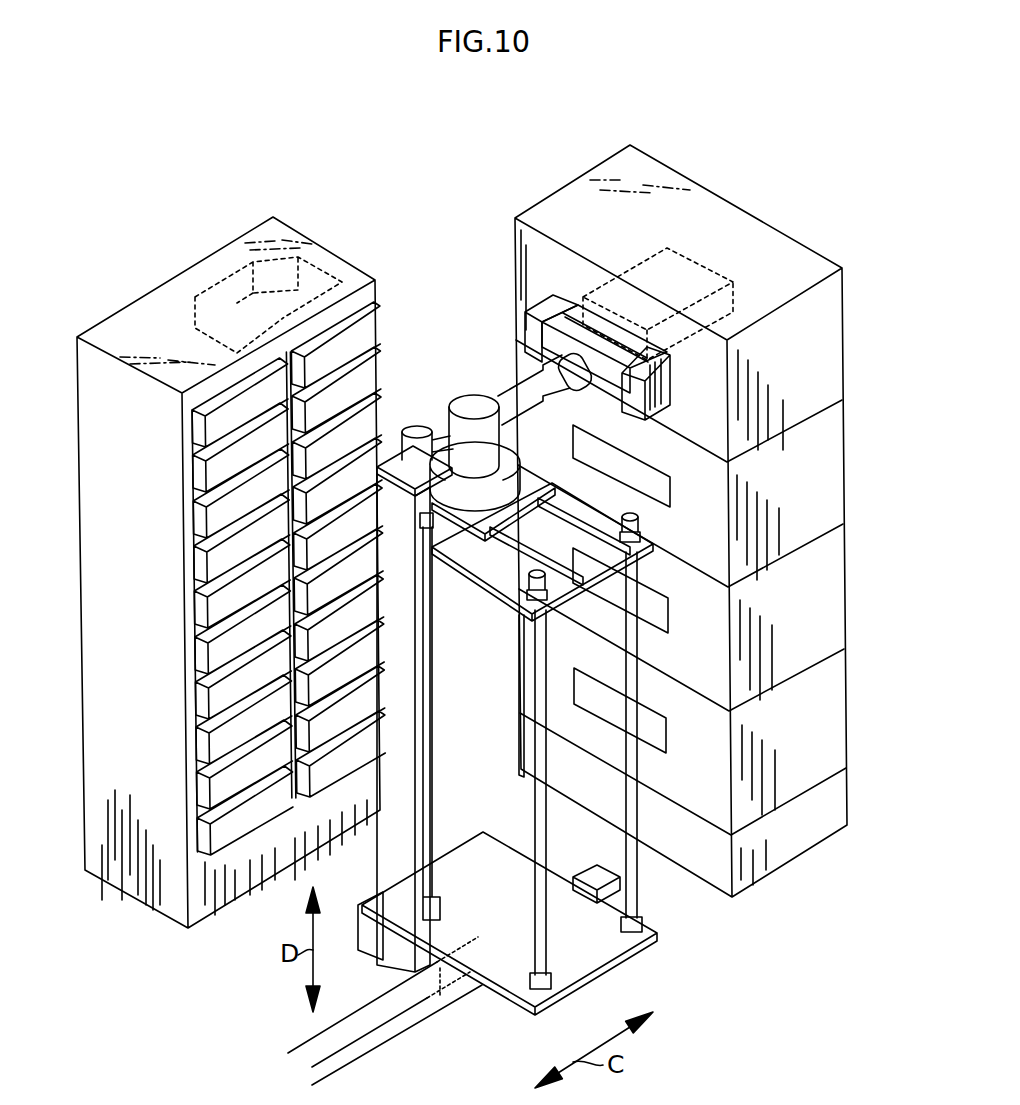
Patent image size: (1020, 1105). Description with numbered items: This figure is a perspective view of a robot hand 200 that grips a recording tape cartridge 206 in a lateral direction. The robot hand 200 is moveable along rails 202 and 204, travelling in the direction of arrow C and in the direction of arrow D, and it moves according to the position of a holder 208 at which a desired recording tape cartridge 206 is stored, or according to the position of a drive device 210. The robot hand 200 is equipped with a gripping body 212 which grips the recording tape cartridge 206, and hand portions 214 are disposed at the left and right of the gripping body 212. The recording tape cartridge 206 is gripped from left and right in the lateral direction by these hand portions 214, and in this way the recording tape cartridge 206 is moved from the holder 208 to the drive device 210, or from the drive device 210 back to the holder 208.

The robot hand 200 is at (465, 371).
The rail 202 is at (383, 1033).
The rail 204 is at (525, 772).
The recording tape cartridge 206 is at (233, 454).
The holder 208 is at (198, 562).
The drive device 210 is at (830, 445).
The gripping body 212 is at (642, 346).
The hand portion 214 is at (545, 311).